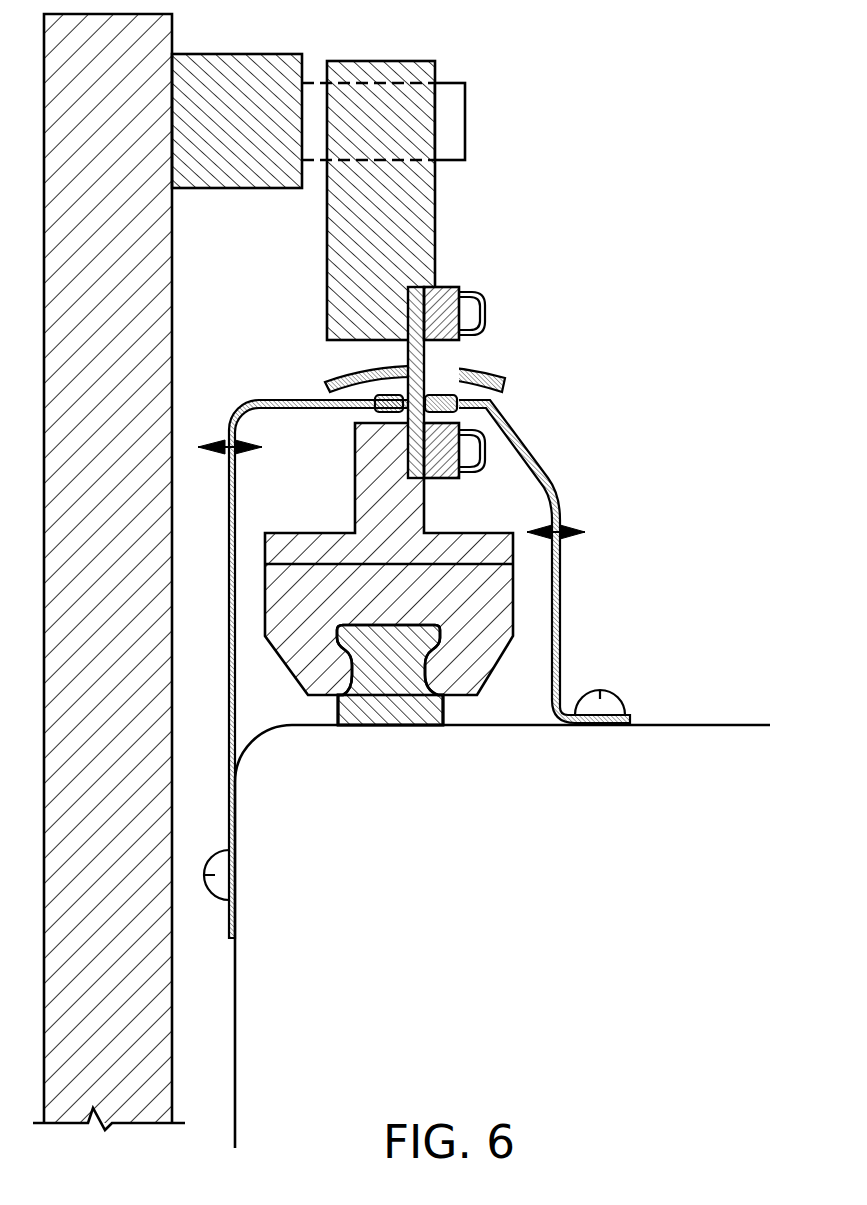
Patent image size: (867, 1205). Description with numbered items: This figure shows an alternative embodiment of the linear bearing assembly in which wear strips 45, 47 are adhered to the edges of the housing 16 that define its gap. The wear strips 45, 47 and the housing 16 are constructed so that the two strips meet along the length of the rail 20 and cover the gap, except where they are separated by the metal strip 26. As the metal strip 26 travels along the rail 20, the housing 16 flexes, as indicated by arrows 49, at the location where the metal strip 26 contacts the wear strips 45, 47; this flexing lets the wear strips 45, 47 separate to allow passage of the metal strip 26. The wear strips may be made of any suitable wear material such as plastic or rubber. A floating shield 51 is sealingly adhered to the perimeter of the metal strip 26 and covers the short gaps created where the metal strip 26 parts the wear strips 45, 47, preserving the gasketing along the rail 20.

The housing 16 is at (540, 462).
The rail 20 is at (393, 717).
The metal strip 26 is at (408, 349).
The wear strip 45 is at (377, 408).
The wear strip 47 is at (452, 393).
The arrows 49 is at (226, 440).
The floating shield 51 is at (462, 368).